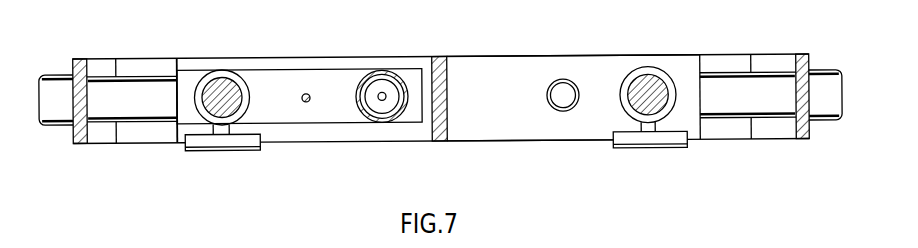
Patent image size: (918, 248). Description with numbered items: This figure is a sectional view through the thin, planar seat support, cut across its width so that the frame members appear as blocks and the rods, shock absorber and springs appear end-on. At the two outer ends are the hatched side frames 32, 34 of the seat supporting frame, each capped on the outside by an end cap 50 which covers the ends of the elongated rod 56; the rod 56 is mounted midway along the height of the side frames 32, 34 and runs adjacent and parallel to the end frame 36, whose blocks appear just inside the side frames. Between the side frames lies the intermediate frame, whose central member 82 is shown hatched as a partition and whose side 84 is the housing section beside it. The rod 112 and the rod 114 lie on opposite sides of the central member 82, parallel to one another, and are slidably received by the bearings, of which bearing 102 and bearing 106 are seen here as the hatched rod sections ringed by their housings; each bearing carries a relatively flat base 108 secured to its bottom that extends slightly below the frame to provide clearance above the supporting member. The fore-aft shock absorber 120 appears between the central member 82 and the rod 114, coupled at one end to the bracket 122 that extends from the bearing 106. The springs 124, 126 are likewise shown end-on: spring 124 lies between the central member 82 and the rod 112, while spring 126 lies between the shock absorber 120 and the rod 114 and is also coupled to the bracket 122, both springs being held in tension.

The side frame 32 is at (77, 57).
The side frame 34 is at (805, 140).
The end frame 36 is at (138, 131).
The end cap 50 is at (53, 77).
The rod 56 is at (142, 85).
The central member 82 is at (437, 57).
The side 84 is at (502, 130).
The bearing 102 is at (647, 71).
The bearing 106 is at (218, 68).
The base 108 is at (213, 142).
The rod 112 is at (655, 112).
The rod 114 is at (228, 109).
The fore-aft shock absorber 120 is at (380, 70).
The bracket 122 is at (352, 114).
The spring 124 is at (562, 84).
The spring 126 is at (303, 93).